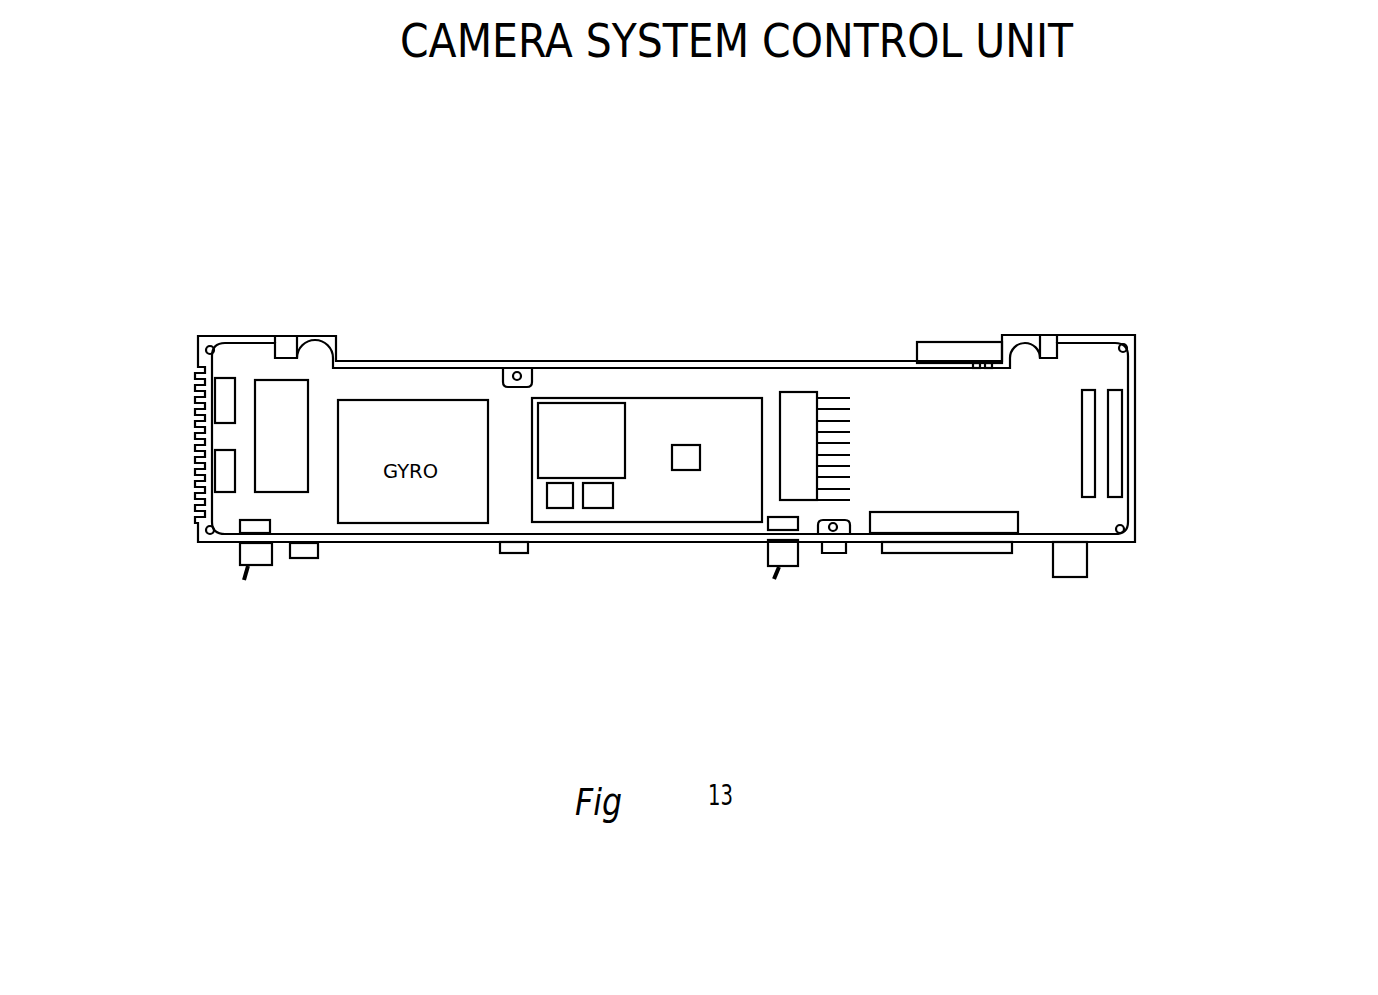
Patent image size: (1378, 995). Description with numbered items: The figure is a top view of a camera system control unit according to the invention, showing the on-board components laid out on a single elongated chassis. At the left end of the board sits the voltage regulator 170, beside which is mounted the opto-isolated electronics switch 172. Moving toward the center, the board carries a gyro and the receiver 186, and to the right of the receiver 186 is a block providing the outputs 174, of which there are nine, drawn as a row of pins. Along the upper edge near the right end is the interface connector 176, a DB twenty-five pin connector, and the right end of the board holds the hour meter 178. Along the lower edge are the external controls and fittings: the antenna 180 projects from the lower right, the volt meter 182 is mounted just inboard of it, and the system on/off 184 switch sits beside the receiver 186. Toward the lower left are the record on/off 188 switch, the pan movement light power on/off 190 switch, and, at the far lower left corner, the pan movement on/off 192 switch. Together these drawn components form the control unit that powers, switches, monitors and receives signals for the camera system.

The voltage regulator 170 is at (180, 364).
The electronics switch 172 is at (484, 332).
The outputs 174 is at (866, 372).
The interface connector 176 is at (1113, 288).
The hour meter 178 is at (1217, 427).
The antenna 180 is at (1044, 643).
The volt meter 182 is at (930, 584).
The system on/off 184 is at (833, 643).
The receiver 186 is at (647, 558).
The record on/off 188 is at (458, 582).
The pan movement light power on/off 190 is at (434, 646).
The pan movement on/off 192 is at (231, 657).